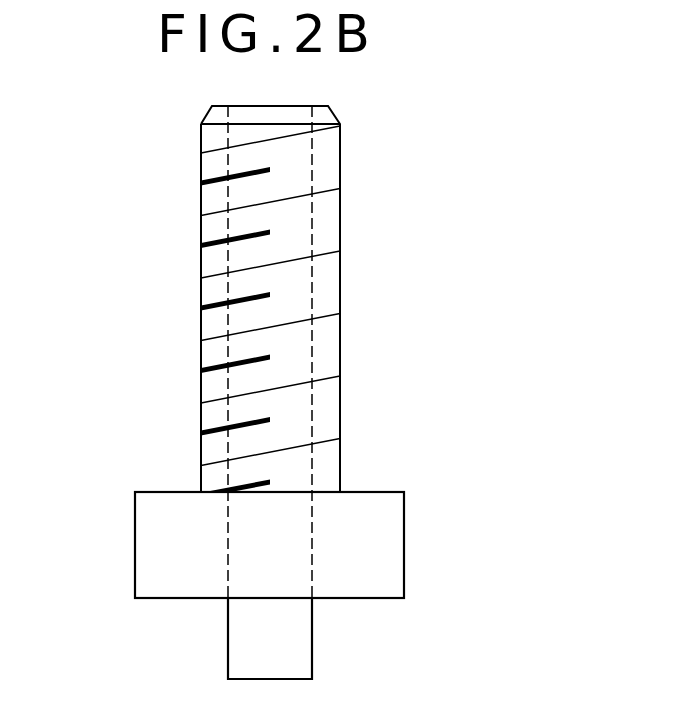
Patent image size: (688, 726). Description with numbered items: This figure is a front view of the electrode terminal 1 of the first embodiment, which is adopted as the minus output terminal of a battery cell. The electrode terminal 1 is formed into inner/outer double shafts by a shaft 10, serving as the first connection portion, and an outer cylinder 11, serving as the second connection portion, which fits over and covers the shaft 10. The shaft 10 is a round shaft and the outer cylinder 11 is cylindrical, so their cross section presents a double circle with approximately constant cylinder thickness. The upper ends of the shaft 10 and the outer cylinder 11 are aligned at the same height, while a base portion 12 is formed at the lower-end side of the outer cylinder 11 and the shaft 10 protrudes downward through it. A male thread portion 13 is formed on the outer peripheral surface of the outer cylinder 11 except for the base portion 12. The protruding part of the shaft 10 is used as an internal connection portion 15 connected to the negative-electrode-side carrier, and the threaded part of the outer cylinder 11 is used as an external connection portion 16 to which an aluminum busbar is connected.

The electrode terminal 1 is at (394, 238).
The shaft 10 is at (222, 412).
The outer cylinder 11 is at (201, 350).
The base portion 12 is at (135, 546).
The male thread portion 13 is at (201, 229).
The internal connection portion 15 is at (313, 655).
The external connection portion 16 is at (341, 355).